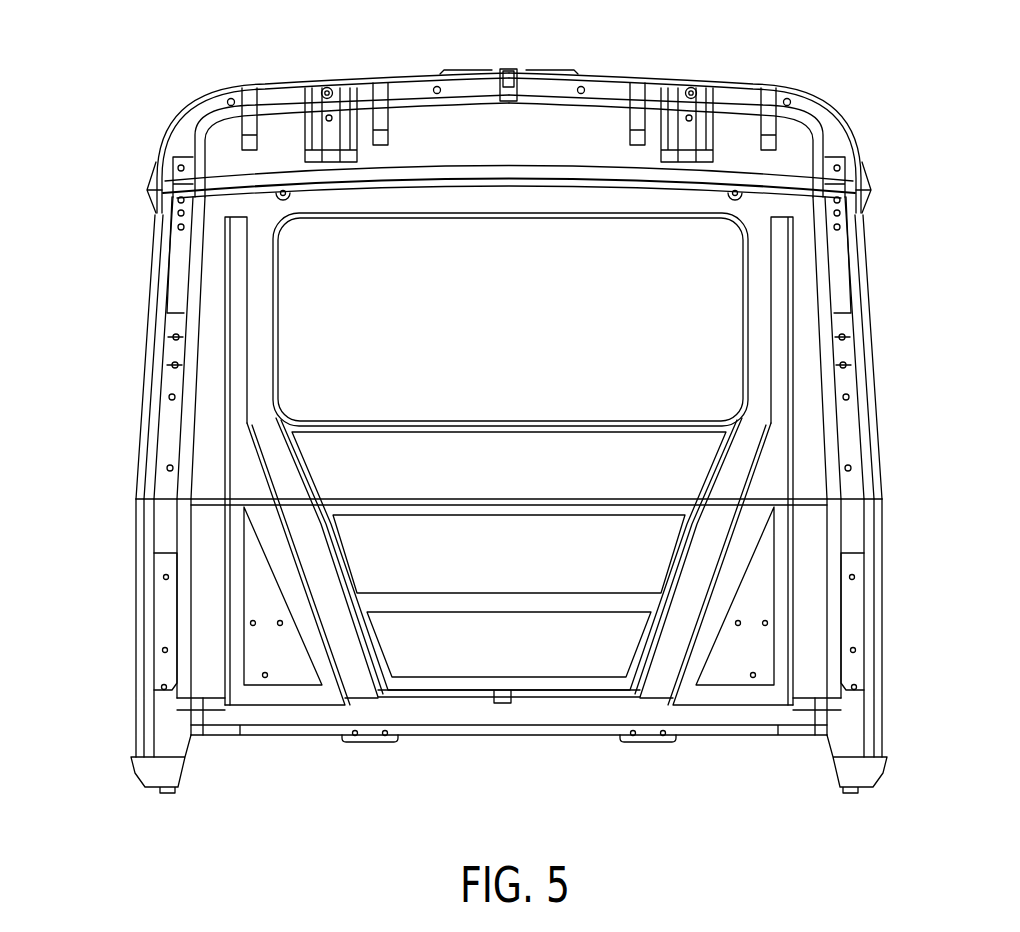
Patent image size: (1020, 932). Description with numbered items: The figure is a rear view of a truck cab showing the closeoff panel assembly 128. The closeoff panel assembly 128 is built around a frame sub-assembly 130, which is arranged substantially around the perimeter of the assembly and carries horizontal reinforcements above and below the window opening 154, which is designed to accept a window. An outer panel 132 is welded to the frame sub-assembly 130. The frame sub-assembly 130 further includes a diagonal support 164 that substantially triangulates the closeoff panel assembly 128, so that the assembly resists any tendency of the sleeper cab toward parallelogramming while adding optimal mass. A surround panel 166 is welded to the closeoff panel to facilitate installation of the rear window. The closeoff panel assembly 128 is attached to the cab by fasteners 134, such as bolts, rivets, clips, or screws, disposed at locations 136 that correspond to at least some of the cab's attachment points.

The closeoff panel assembly 128 is at (660, 778).
The frame sub-assembly 130 is at (828, 71).
The outer panel 132 is at (538, 198).
The fasteners 134 is at (170, 398).
The locations 136 is at (465, 495).
The window opening 154 is at (532, 370).
The diagonal support 164 is at (352, 656).
The surround panel 166 is at (757, 298).